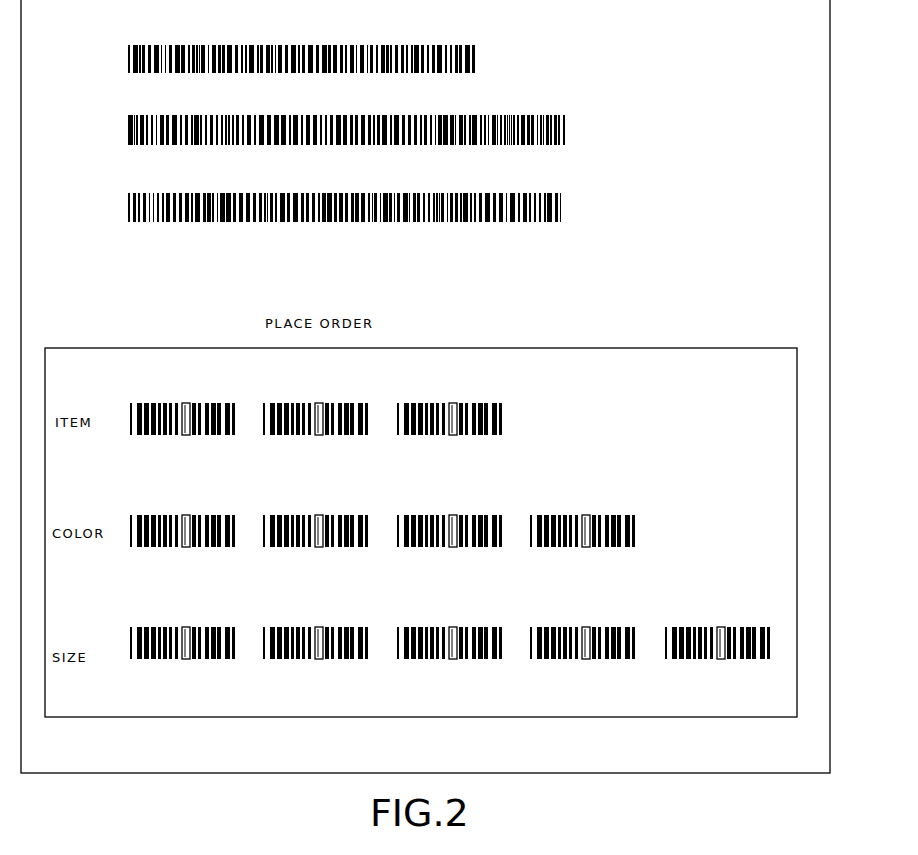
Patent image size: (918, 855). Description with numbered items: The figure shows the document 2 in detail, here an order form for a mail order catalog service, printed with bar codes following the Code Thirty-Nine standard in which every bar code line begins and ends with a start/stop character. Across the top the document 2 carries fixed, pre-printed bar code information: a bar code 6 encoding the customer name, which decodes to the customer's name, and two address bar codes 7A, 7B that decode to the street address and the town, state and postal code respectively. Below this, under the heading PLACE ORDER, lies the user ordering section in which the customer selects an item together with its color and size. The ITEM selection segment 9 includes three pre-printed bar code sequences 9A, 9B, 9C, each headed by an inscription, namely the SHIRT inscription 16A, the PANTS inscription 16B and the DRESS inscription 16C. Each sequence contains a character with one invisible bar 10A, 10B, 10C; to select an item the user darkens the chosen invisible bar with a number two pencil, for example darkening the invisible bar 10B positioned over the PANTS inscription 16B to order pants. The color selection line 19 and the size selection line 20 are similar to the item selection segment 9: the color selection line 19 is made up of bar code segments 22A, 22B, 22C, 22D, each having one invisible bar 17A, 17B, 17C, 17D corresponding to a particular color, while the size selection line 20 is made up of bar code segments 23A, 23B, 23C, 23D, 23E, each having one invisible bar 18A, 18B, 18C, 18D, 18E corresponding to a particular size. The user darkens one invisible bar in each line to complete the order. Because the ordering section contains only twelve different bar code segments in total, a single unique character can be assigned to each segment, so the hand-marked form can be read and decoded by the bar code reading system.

The document 2 is at (118, 773).
The customer name bar code 6 is at (126, 52).
The address bar code 7A is at (126, 130).
The address bar code 7B is at (126, 208).
The ITEM selection segment 9 is at (336, 443).
The bar code sequence 9A is at (156, 442).
The bar code sequence 9B is at (306, 444).
The bar code sequence 9C is at (448, 445).
The invisible bar 10A is at (190, 437).
The invisible bar 10B is at (322, 437).
The invisible bar 10C is at (453, 437).
The SHIRT inscription 16A is at (156, 386).
The PANTS inscription 16B is at (292, 386).
The DRESS inscription 16C is at (426, 386).
The invisible bar 17A is at (190, 549).
The invisible bar 17B is at (323, 549).
The invisible bar 17C is at (457, 548).
The invisible bar 17D is at (592, 549).
The invisible bar 18A is at (180, 661).
The invisible bar 18B is at (313, 661).
The invisible bar 18C is at (466, 668).
The invisible bar 18D is at (592, 660).
The invisible bar 18E is at (727, 660).
The color selection line 19 is at (393, 547).
The size selection line 20 is at (447, 660).
The bar code segment 22A is at (155, 539).
The bar code segment 22B is at (308, 545).
The bar code segment 22C is at (451, 547).
The bar code segment 22D is at (584, 547).
The bar code segment 23A is at (151, 654).
The bar code segment 23B is at (286, 656).
The bar code segment 23C is at (425, 656).
The bar code segment 23D is at (570, 659).
The bar code segment 23E is at (707, 660).